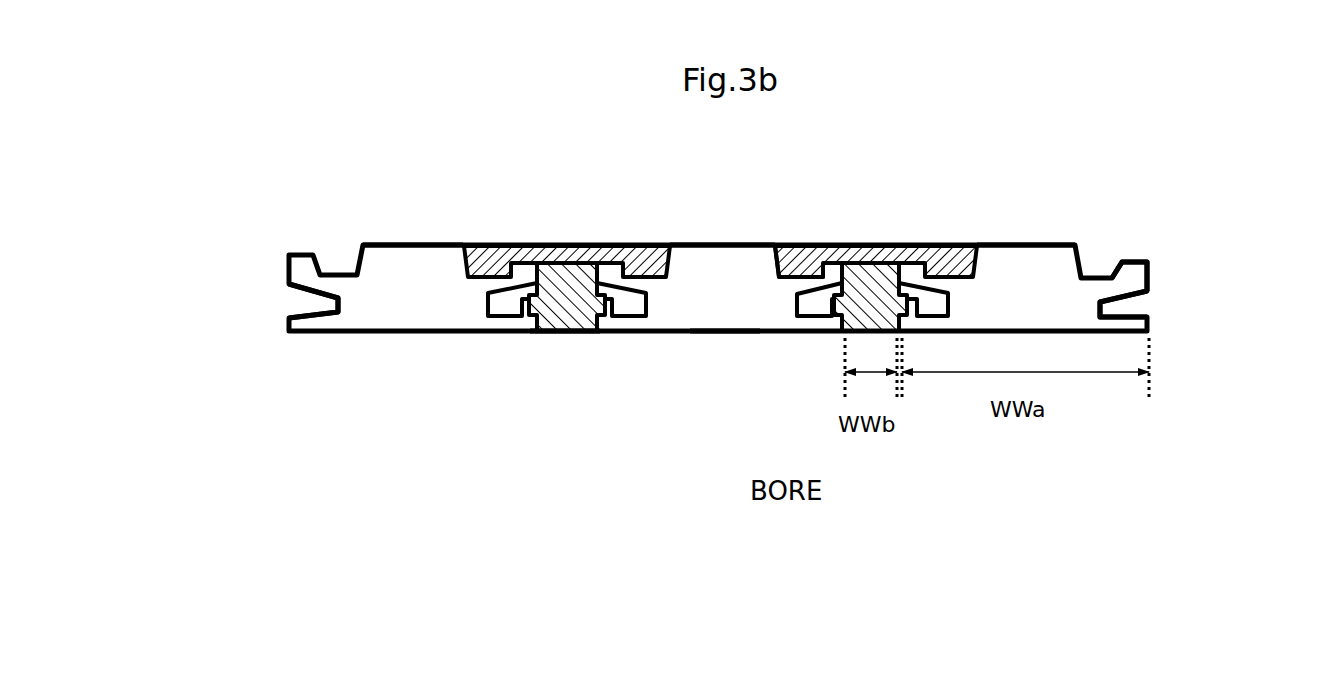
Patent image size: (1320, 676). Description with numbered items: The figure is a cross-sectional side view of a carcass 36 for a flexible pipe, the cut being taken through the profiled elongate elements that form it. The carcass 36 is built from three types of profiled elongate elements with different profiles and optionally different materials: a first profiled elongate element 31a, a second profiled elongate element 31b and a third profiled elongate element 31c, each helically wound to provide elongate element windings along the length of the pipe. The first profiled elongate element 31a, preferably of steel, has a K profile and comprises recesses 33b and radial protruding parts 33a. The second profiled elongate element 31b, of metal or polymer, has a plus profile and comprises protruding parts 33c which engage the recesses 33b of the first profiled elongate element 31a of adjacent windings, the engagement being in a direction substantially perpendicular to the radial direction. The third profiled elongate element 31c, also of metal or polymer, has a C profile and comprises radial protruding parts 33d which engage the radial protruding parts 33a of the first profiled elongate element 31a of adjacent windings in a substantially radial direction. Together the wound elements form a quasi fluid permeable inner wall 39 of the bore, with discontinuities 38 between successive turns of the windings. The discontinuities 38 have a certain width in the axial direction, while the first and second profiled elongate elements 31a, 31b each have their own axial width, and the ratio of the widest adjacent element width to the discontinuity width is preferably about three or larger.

The carcass 36 is at (1035, 175).
The first profiled elongate element 31a is at (413, 246).
The second profiled elongate element 31b is at (541, 282).
The third profiled elongate element 31c is at (876, 235).
The radial protruding parts 33a is at (1142, 263).
The recesses 33b is at (307, 302).
The protruding parts 33c is at (532, 300).
The radial protruding parts 33d is at (803, 248).
The discontinuities 38 is at (592, 335).
The quasi fluid permeable inner wall 39 is at (720, 377).